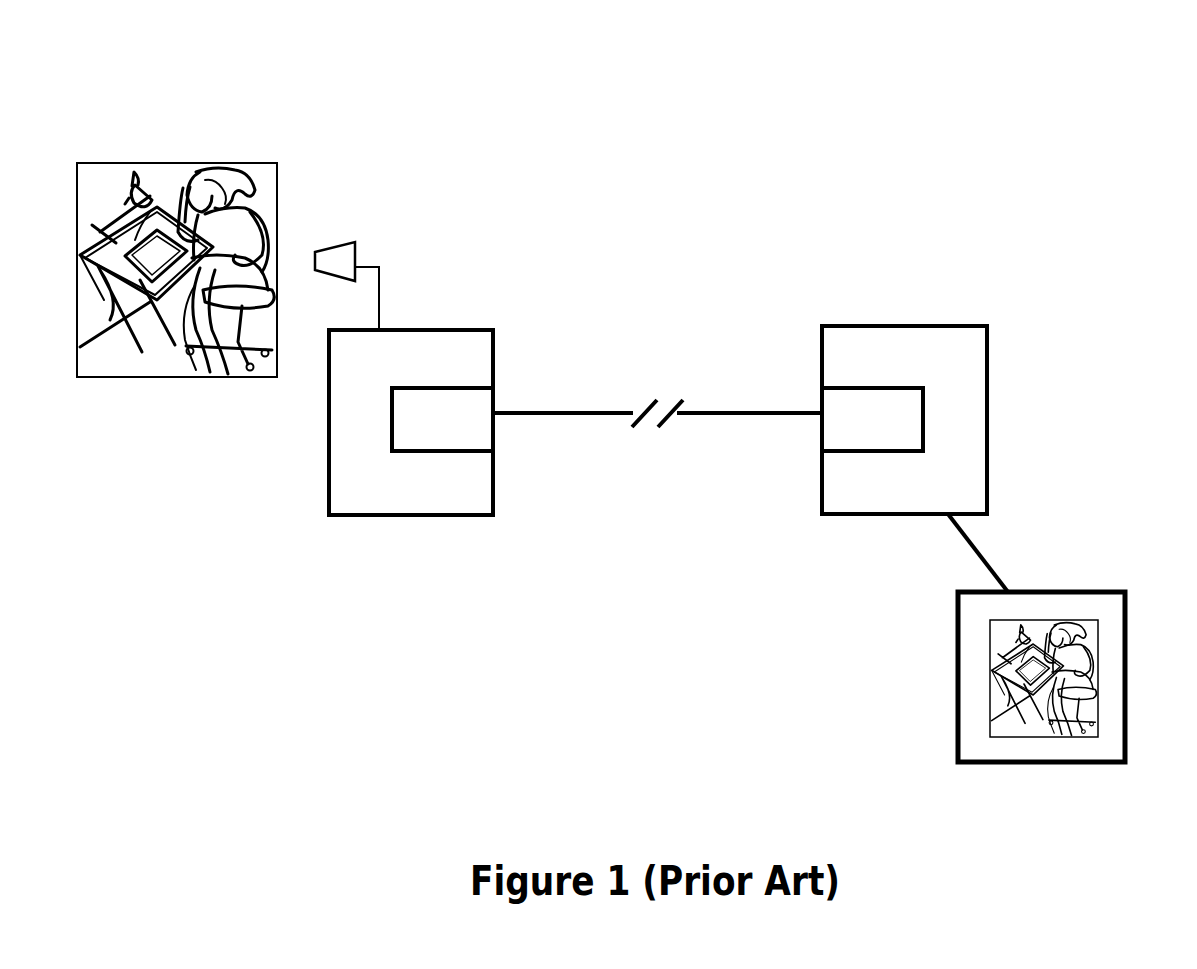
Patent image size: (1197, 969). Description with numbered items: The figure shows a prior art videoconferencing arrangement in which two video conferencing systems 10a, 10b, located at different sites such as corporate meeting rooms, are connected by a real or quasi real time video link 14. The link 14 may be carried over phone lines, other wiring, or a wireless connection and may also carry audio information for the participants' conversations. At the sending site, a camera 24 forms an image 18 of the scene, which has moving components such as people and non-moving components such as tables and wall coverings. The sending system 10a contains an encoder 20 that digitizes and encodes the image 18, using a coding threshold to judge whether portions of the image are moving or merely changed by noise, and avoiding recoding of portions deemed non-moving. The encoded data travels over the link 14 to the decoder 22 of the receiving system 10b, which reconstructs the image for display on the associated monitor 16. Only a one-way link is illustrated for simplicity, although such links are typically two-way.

The video conferencing system 10a is at (443, 304).
The video conferencing system 10b is at (922, 304).
The video link 14 is at (570, 413).
The monitor 16 is at (1085, 762).
The image 18 is at (266, 127).
The encoder 20 is at (443, 455).
The decoder 22 is at (858, 457).
The camera 24 is at (343, 240).